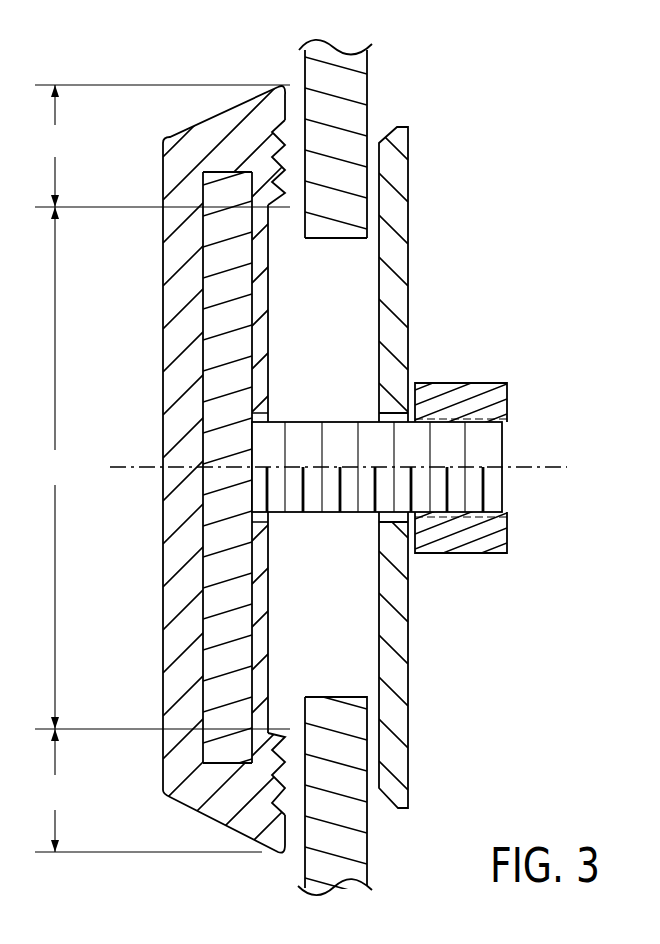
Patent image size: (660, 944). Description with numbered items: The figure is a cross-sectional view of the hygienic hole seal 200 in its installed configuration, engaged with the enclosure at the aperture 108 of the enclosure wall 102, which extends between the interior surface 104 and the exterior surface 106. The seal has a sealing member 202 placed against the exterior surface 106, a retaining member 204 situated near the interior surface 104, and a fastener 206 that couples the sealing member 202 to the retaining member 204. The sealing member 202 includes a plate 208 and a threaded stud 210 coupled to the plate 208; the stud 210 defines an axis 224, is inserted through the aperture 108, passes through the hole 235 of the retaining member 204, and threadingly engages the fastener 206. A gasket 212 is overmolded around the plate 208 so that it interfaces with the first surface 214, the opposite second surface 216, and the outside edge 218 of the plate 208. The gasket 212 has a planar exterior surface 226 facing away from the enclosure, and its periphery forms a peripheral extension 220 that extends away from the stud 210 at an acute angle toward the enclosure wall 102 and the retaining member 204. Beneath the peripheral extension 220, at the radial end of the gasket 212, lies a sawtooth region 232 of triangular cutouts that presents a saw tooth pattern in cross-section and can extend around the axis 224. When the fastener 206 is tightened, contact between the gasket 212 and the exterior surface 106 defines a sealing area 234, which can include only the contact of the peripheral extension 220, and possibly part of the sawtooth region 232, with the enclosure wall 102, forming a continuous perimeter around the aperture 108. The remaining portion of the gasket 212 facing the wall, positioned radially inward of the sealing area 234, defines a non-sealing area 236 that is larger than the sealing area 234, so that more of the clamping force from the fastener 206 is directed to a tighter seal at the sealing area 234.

The hygienic hole seal 200 is at (120, 70).
The sealing member 202 is at (158, 650).
The retaining member 204 is at (400, 665).
The fastener 206 is at (458, 553).
The plate 208 is at (240, 252).
The stud 210 is at (490, 448).
The gasket 212 is at (177, 513).
The first surface 214 is at (205, 602).
The second surface 216 is at (247, 341).
The outside edge 218 is at (233, 172).
The peripheral extension 220 is at (243, 100).
The axis 224 is at (540, 470).
The exterior surface 226 is at (163, 307).
The sawtooth region 232 is at (288, 799).
The sealing area 234 is at (162, 468).
The hole 235 is at (376, 516).
The non-sealing area 236 is at (162, 468).
The enclosure wall 102 is at (342, 780).
The interior surface 104 is at (367, 848).
The exterior surface 106 is at (305, 855).
The aperture 108 is at (348, 672).